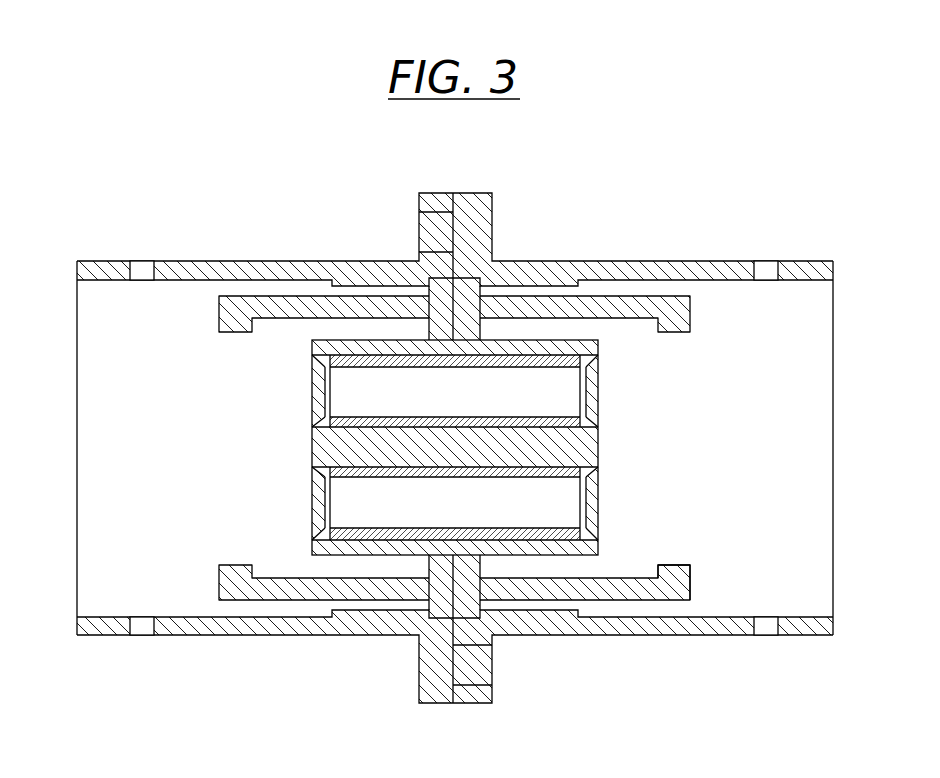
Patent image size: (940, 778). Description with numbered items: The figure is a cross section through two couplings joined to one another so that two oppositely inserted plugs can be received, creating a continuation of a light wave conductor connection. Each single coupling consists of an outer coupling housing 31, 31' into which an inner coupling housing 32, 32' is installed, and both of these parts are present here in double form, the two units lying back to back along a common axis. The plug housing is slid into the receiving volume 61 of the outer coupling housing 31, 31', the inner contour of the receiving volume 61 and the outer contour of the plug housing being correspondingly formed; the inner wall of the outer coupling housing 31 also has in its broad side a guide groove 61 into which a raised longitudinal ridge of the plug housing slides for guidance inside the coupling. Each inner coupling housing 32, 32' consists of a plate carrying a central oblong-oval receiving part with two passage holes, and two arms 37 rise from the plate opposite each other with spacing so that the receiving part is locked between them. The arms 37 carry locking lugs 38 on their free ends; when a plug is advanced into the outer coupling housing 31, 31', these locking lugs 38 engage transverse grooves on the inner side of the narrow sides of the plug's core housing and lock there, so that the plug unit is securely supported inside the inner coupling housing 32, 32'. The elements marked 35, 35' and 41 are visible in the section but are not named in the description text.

The outer coupling housing 31 is at (594, 246).
The outer coupling housing 31' is at (324, 376).
The inner coupling housing 32 is at (526, 447).
The inner coupling housing 32' is at (364, 391).
The first seal 35 is at (797, 409).
The second seal 35' is at (177, 408).
The arm 37 is at (640, 577).
The locking lug 38 is at (679, 567).
The liner 41 is at (352, 528).
The receiving volume 61 is at (802, 617).